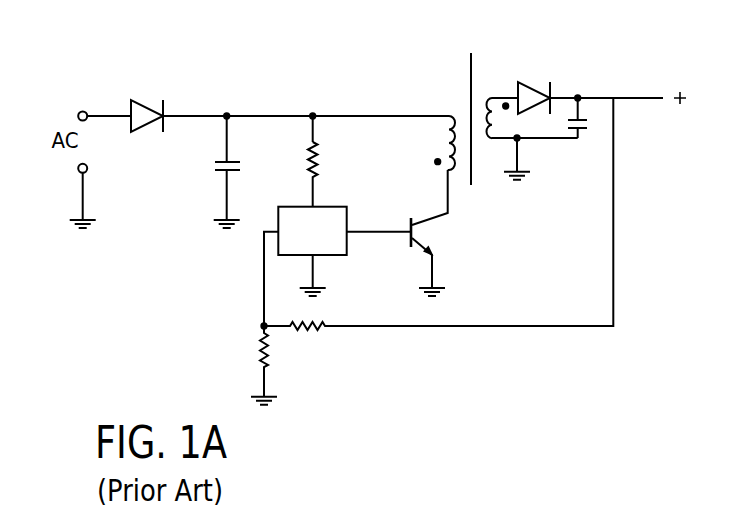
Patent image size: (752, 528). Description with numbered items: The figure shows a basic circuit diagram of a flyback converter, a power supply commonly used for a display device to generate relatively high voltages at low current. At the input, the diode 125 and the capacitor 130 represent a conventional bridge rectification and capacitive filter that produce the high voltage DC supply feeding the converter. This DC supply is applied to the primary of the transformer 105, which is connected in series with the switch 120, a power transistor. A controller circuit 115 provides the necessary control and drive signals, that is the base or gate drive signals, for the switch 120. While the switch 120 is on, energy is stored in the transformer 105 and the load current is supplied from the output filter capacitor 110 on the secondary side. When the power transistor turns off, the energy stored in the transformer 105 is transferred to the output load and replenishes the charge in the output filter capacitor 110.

The transformer 105 is at (451, 88).
The output filter capacitor 110 is at (593, 125).
The controller circuit 115 is at (329, 244).
The switch 120 is at (433, 233).
The diode 125 is at (148, 97).
The capacitor 130 is at (207, 165).